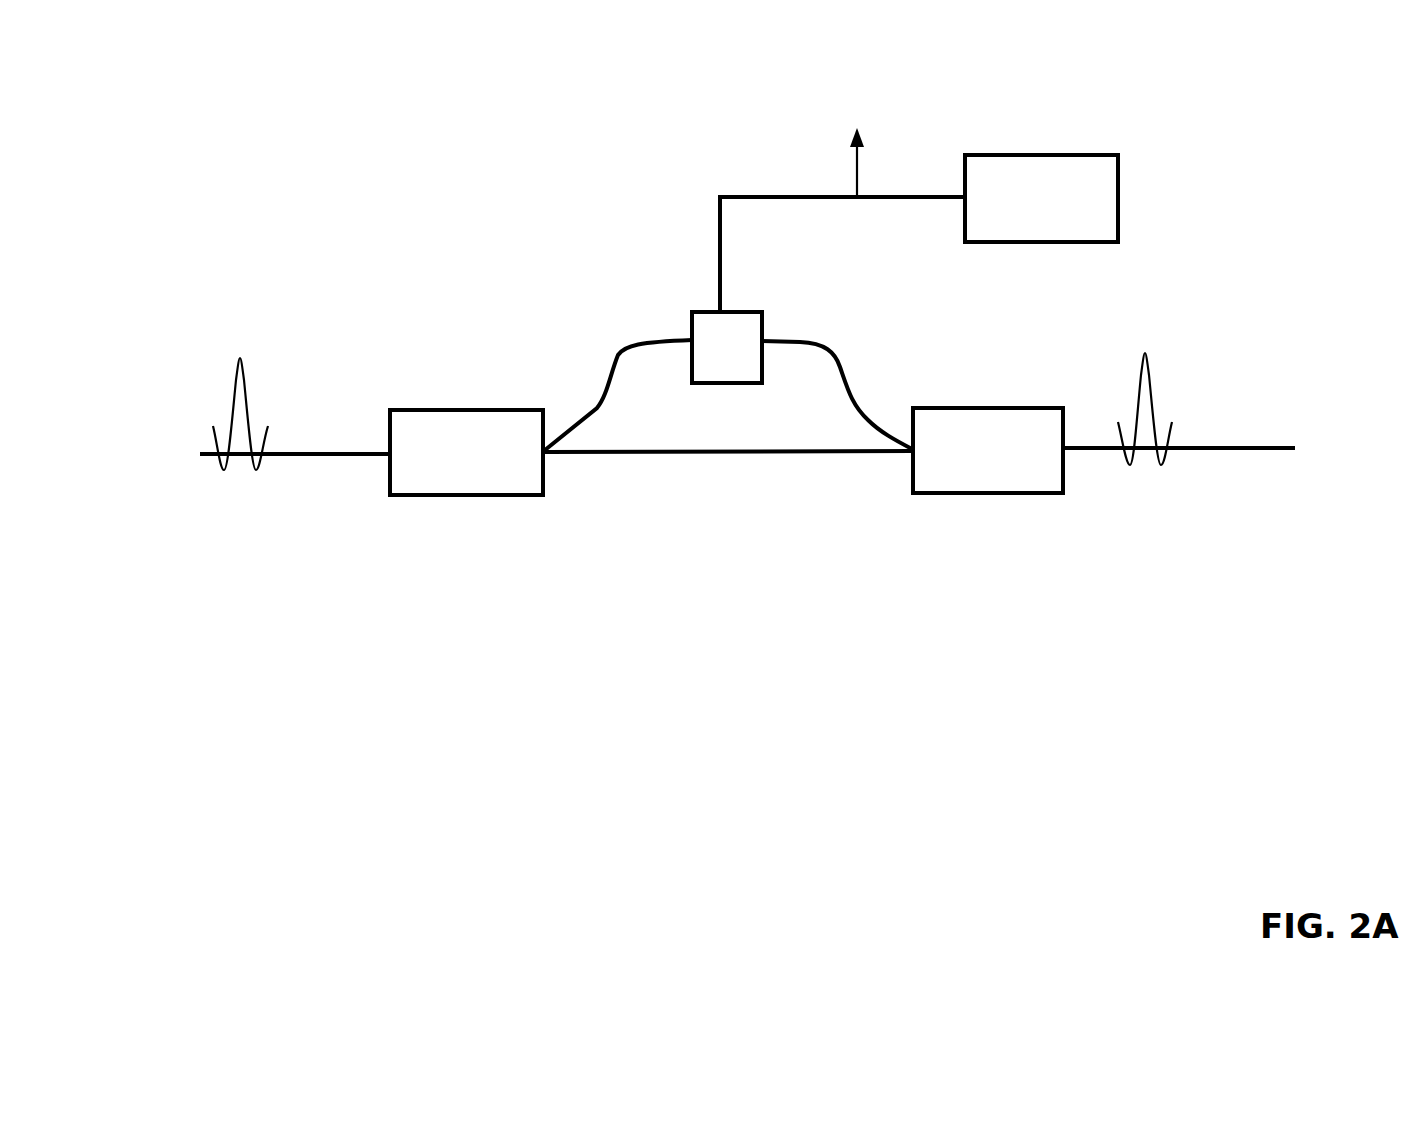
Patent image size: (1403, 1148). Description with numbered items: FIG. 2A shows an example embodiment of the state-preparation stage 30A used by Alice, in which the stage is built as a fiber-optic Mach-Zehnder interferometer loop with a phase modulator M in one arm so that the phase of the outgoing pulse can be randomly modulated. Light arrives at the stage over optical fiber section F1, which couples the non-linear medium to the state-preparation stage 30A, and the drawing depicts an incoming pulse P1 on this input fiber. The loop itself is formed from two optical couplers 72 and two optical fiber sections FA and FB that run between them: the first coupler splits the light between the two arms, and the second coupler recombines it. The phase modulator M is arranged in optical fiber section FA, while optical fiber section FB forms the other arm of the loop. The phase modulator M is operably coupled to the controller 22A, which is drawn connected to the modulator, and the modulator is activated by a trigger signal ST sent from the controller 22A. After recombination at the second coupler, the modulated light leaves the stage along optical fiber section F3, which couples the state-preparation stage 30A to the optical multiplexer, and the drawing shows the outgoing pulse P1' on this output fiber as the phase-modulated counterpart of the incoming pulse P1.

The state-preparation stage 30A is at (284, 133).
The controller 22A is at (1013, 213).
The optical coupler 72 is at (448, 469).
The phase modulator M is at (713, 366).
The optical fiber section FA is at (804, 338).
The optical fiber section FB is at (708, 453).
The optical fiber section F1 is at (335, 456).
The optical fiber section F3 is at (1216, 451).
The input optical pulse P1 is at (273, 393).
The output optical pulse P1' is at (1183, 388).
The trigger signal ST is at (853, 136).